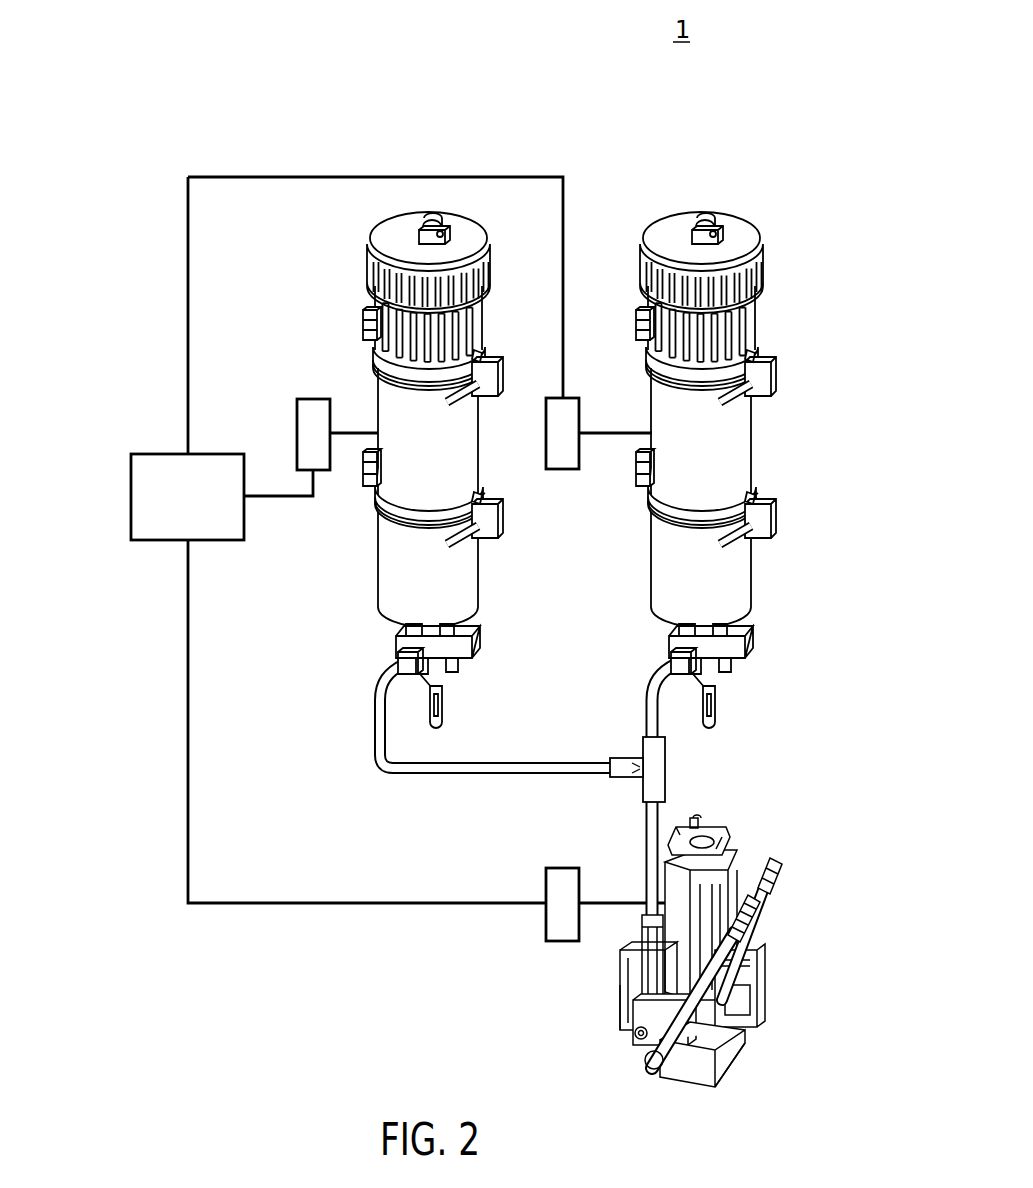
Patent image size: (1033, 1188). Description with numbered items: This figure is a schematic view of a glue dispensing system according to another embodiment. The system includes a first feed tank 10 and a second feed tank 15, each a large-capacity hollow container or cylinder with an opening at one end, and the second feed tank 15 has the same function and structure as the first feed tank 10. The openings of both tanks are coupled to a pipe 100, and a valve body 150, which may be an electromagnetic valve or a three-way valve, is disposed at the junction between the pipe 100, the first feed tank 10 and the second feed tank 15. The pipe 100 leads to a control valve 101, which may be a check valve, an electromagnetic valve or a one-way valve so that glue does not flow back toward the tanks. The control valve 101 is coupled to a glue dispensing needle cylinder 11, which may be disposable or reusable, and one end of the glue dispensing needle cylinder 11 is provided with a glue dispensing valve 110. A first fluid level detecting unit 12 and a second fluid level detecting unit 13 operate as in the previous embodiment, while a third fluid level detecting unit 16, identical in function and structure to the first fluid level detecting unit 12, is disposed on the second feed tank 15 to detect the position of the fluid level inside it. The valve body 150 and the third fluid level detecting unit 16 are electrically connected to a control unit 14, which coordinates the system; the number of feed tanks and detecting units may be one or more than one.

The first feed tank 10 is at (736, 228).
The glue dispensing needle cylinder 11 is at (718, 855).
The first fluid level detecting unit 12 is at (555, 942).
The second fluid level detecting unit 13 is at (562, 470).
The control unit 14 is at (148, 453).
The second feed tank 15 is at (393, 588).
The third fluid level detecting unit 16 is at (313, 399).
The pipe 100 is at (650, 692).
The control valve 101 is at (620, 1018).
The glue dispensing valve 110 is at (722, 1062).
The valve body 150 is at (623, 772).